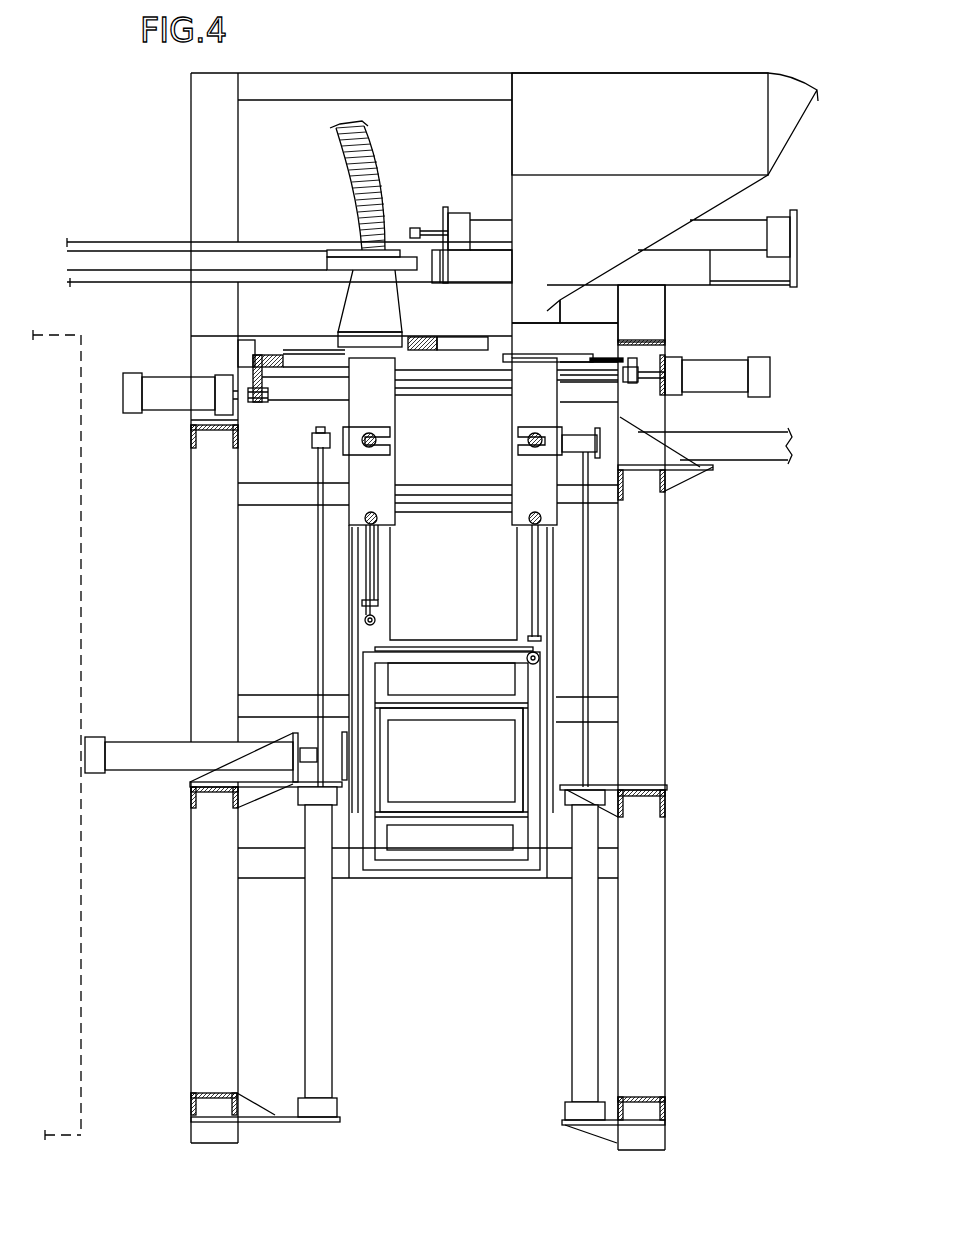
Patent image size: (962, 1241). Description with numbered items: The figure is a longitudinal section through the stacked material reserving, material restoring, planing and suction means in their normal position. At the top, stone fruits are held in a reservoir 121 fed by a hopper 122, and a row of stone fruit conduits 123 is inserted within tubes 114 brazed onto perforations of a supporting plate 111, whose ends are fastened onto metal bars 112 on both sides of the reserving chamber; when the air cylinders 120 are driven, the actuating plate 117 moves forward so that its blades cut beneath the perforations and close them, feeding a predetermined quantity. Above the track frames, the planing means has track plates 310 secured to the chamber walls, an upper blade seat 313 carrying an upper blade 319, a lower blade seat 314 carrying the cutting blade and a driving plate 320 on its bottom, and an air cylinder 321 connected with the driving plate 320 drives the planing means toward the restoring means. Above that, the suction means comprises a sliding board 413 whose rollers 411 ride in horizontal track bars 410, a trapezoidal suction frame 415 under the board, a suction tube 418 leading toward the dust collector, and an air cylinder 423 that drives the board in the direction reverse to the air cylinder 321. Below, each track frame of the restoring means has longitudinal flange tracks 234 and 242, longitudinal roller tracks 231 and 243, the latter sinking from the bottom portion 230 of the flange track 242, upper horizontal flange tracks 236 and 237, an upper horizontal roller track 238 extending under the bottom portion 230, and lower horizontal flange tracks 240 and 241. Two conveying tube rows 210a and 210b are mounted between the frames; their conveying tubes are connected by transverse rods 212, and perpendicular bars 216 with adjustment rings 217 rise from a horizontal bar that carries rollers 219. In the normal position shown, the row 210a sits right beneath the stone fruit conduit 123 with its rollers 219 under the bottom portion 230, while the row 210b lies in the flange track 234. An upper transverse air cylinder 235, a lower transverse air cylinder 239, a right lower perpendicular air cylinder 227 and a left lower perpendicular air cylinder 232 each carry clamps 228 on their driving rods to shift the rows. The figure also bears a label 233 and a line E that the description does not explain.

The reservoir 121 is at (670, 92).
The hopper 122 is at (795, 88).
The stone fruit conduits 123 is at (566, 318).
The supporting plate 111 is at (565, 357).
The shaped metal bar 112 is at (600, 350).
The tubes 114 is at (520, 340).
The actuating plate 117 is at (638, 370).
The air cylinders 120 is at (698, 372).
The horizontal track bars 410 is at (148, 258).
The rollers 411 is at (337, 250).
The sliding board 413 is at (358, 262).
The trapezoidal suction frame 415 is at (350, 323).
The suction tube 418 is at (366, 146).
The air cylinder 423 is at (497, 227).
The upper blade seat 313 is at (422, 337).
The track plate 310 is at (468, 347).
The lower blade seat 314 is at (266, 354).
The upper blade 319 is at (380, 354).
The driving plate 320 is at (257, 404).
The air cylinder 321 is at (158, 400).
The material conveying tube row 210a is at (532, 493).
The material conveying tube row 210b is at (378, 502).
The transverse rods 212 is at (520, 442).
The clamp 228 is at (525, 428).
The support bracket 233 is at (608, 437).
The upper transverse air cylinder 235 is at (708, 443).
The upper horizontal flange track 236 is at (412, 390).
The upper horizontal flange track 237 is at (405, 495).
The longitudinal flange track 234 is at (362, 535).
The adjustment ring 217 is at (377, 592).
The perpendicular bars 216 is at (532, 559).
The rollers 219 is at (377, 618).
The bottom portion 230 is at (525, 650).
The longitudinal roller track 231 is at (370, 635).
The longitudinal flange track 242 is at (540, 593).
The upper horizontal roller track 238 is at (480, 654).
The lower horizontal flange track 240 is at (428, 708).
The lower horizontal flange track 241 is at (472, 813).
The longitudinal roller track 243 is at (533, 795).
The lower transverse air cylinder 239 is at (167, 753).
The left lower perpendicular air cylinder 232 is at (320, 943).
The right lower perpendicular air cylinder 227 is at (585, 970).
The reference plane E is at (58, 578).